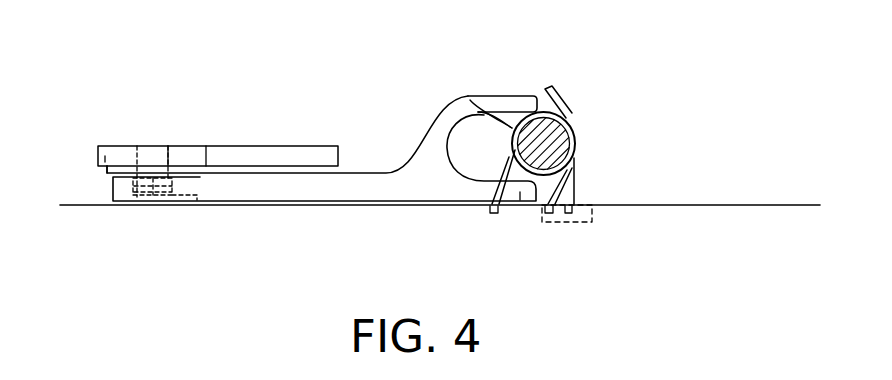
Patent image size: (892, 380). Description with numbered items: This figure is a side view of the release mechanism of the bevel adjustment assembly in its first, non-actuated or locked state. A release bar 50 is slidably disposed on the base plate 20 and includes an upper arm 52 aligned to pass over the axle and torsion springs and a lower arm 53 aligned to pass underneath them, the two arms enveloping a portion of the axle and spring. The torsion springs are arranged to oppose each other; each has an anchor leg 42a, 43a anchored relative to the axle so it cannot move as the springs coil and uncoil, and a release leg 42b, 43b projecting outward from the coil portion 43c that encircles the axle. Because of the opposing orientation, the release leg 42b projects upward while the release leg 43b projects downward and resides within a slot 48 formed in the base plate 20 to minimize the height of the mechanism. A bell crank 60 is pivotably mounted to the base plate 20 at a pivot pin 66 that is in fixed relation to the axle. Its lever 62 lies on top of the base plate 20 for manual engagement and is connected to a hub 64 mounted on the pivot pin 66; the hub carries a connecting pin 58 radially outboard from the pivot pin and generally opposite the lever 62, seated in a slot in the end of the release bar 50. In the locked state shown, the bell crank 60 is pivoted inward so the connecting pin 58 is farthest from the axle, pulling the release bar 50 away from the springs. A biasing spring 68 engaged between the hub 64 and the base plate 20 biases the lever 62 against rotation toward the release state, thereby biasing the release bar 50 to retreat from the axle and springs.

The base plate 20 is at (748, 205).
The anchor leg 42a is at (576, 172).
The release leg 42b is at (553, 100).
The anchor leg 43a is at (490, 188).
The release leg 43b is at (577, 190).
The coil portion 43c is at (472, 108).
The slot 48 is at (587, 210).
The release bar 50 is at (315, 188).
The upper arm 52 is at (508, 103).
The lower arm 53 is at (520, 192).
The connecting pin 58 is at (136, 168).
The bell crank 60 is at (243, 152).
The lever 62 is at (297, 152).
The hub 64 is at (187, 152).
The pivot pin 66 is at (167, 158).
The biasing spring 68 is at (107, 173).